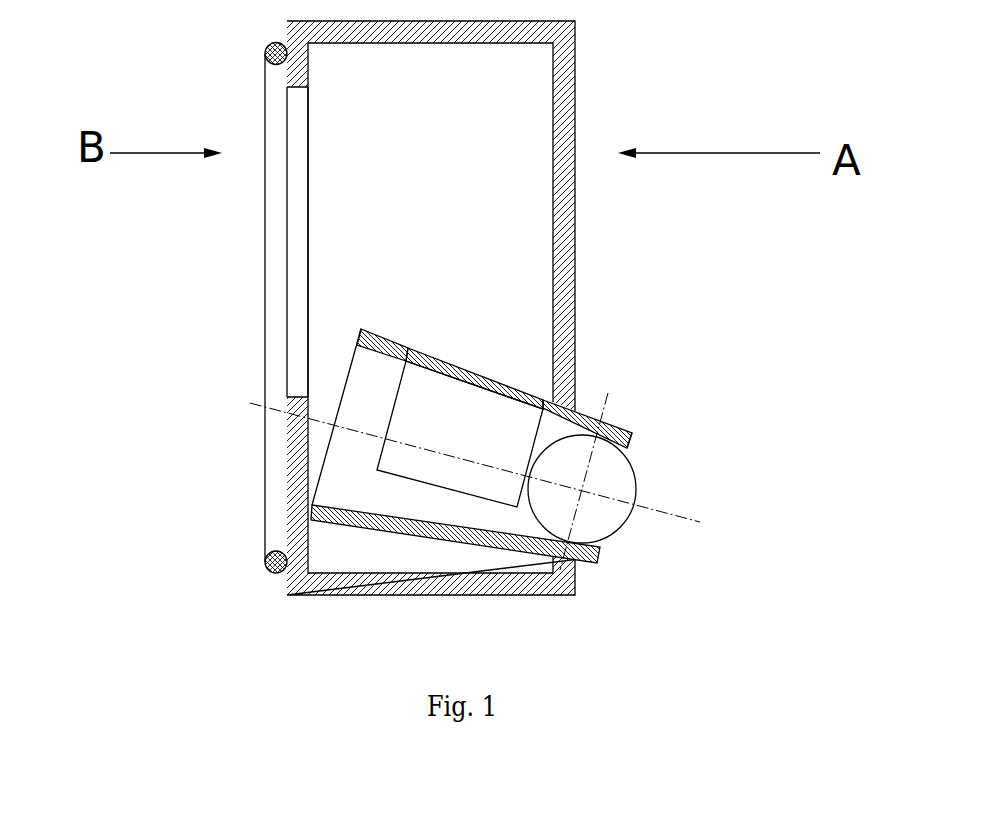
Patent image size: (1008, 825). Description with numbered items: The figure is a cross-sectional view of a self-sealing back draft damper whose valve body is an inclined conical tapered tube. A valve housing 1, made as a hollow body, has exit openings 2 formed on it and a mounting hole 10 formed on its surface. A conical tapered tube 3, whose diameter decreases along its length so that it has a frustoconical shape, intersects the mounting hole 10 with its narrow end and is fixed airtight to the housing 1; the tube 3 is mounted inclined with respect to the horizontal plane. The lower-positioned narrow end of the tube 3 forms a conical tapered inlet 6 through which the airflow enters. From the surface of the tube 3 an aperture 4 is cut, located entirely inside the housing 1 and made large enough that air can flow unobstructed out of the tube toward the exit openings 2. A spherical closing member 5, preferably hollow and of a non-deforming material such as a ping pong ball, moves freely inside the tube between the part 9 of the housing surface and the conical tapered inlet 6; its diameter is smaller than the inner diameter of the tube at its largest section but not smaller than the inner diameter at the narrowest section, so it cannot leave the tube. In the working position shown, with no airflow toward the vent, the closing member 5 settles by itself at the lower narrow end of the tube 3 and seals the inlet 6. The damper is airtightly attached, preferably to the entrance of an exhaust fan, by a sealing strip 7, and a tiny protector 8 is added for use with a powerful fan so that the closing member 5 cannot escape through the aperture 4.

The valve housing 1 is at (577, 86).
The exit openings 2 is at (305, 349).
The conical tapered tube 3 is at (296, 407).
The aperture 4 is at (422, 395).
The spherical closing member 5 is at (598, 505).
The conical tapered inlet 6 is at (628, 450).
The sealing strip 7 is at (262, 548).
The protector 8 is at (511, 395).
The part of the housing surface 9 is at (350, 483).
The mounting hole 10 is at (574, 412).